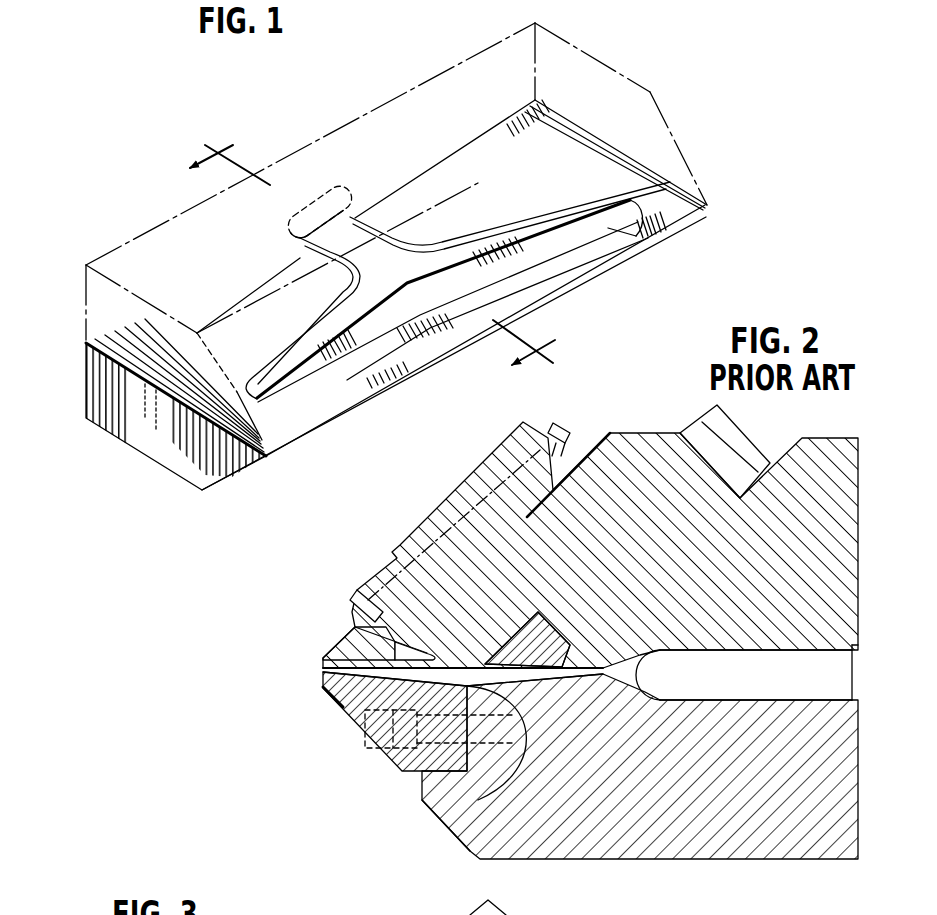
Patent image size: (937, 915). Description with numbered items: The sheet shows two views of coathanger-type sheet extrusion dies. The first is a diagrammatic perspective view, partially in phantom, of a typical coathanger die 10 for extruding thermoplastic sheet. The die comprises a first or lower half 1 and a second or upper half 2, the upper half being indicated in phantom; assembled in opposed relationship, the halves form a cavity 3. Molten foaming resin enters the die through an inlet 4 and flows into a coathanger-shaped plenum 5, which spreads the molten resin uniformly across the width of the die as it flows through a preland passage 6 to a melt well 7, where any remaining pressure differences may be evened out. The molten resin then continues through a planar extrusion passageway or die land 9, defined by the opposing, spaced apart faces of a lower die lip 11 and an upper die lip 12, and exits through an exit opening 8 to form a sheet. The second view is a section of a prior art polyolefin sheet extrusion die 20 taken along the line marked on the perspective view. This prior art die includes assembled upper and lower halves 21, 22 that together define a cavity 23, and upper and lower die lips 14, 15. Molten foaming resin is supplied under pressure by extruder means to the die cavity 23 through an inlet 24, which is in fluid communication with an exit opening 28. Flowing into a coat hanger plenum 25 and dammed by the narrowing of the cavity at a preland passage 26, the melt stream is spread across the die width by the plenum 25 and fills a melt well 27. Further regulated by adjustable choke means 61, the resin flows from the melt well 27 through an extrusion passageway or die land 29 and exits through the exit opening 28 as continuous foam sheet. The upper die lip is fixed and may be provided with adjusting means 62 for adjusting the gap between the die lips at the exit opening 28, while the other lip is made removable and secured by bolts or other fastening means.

In FIG. 1, the first or lower half 1 is at (170, 457).
In FIG. 1, the second or upper half 2 is at (163, 247).
In FIG. 1, the cavity 3 is at (367, 227).
In FIG. 1, the inlet 4 is at (307, 227).
In FIG. 1, the coathanger-shaped plenum 5 is at (458, 338).
In FIG. 1, the preland passage 6 is at (545, 237).
In FIG. 1, the melt well 7 is at (613, 230).
In FIG. 1, the exit opening 8 is at (485, 330).
In FIG. 1, the planar extrusion passageway or die land 9 is at (425, 355).
In FIG. 1, the coathanger die 10 is at (310, 434).
In FIG. 1, the lower die lip 11 is at (620, 257).
In FIG. 1, the upper die lip 12 is at (650, 240).
In FIG. 2, the upper die lip 14 is at (365, 720).
In FIG. 2, the lower die lip 15 is at (340, 650).
In FIG. 2, the prior art sheet extrusion die 20 is at (408, 798).
In FIG. 2, the upper half 21 is at (847, 567).
In FIG. 2, the lower half 22 is at (842, 800).
In FIG. 2, the cavity 23 is at (797, 667).
In FIG. 2, the inlet 24 is at (862, 688).
In FIG. 2, the coat hanger plenum 25 is at (660, 680).
In FIG. 2, the preland passage 26 is at (617, 710).
In FIG. 2, the melt well 27 is at (463, 828).
In FIG. 2, the exit opening 28 is at (320, 668).
In FIG. 2, the extrusion passageway or die land 29 is at (340, 690).
In FIG. 2, the adjustable choke means 61 is at (512, 633).
In FIG. 2, the adjusting means 62 is at (397, 592).